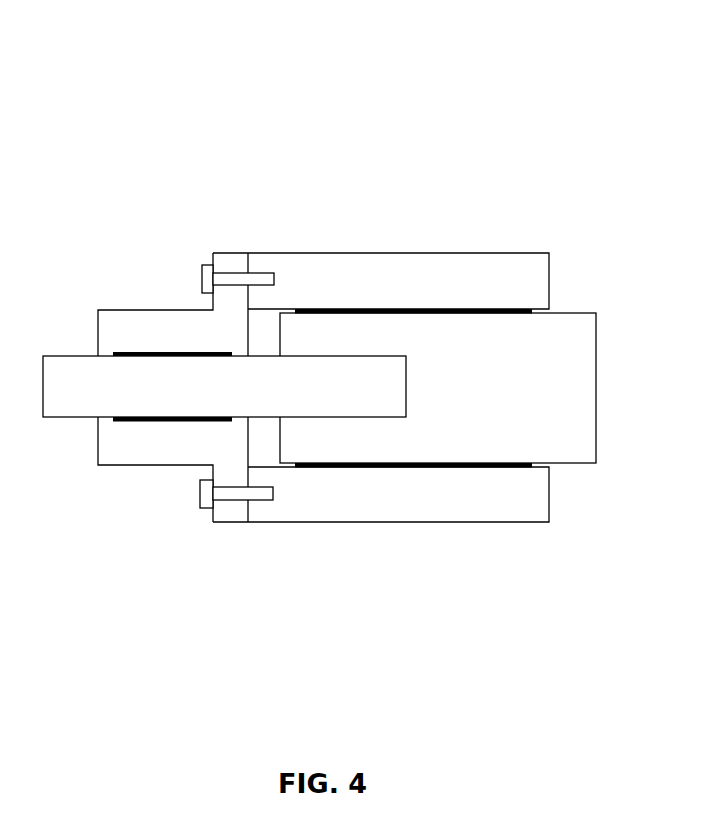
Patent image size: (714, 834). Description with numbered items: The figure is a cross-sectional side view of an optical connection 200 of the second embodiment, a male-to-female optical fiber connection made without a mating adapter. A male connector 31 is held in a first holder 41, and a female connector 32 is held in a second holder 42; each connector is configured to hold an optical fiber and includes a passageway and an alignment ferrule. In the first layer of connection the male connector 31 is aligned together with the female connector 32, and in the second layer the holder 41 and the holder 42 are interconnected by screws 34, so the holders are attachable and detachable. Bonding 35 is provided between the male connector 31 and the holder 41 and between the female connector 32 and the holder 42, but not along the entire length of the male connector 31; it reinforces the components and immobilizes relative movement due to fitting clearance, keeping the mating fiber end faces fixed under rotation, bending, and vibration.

The optical connection 200 is at (323, 92).
The screws 34 is at (194, 274).
The second holder 42 is at (381, 387).
The first holder 41 is at (159, 387).
The male connector 31 is at (224, 386).
The female connector 32 is at (438, 388).
The bonding 35 is at (168, 432).